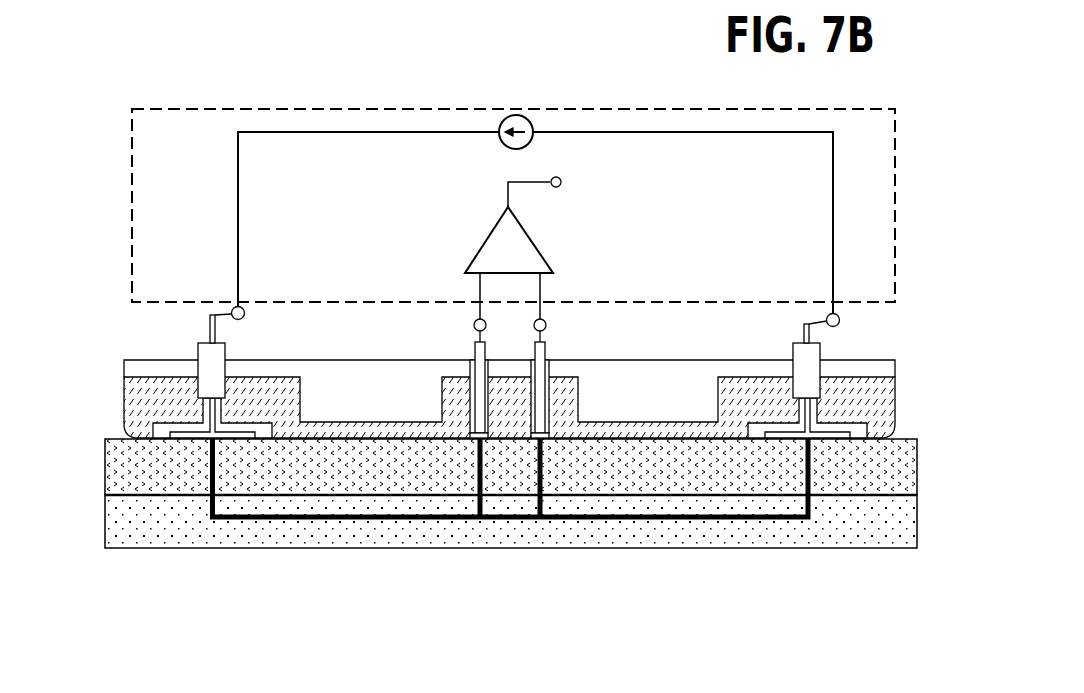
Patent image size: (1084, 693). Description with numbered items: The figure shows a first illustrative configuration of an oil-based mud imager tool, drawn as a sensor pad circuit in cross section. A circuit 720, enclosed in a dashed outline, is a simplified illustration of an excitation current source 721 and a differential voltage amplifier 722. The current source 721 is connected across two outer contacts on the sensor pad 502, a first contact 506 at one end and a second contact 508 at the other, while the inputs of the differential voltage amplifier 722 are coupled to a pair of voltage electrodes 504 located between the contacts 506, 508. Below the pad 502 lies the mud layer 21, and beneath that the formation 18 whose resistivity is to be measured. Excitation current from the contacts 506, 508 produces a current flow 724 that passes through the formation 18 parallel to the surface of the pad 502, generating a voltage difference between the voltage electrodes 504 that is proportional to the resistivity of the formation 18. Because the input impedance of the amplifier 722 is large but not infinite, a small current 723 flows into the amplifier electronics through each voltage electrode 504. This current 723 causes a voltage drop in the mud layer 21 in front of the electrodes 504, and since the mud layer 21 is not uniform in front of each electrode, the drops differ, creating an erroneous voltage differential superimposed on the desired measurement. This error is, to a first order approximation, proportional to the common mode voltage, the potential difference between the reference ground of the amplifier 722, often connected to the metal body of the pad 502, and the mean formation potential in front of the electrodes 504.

The formation 18 is at (105, 513).
The mud layer 21 is at (105, 465).
The sensor pad 502 is at (125, 387).
The voltage electrodes 504 is at (487, 438).
The first contact pad 506 is at (190, 440).
The second contact pad 508 is at (828, 435).
The circuit 720 is at (895, 302).
The excitation current source 721 is at (537, 113).
The differential voltage amplifier 722 is at (488, 242).
The current 723 is at (477, 462).
The current flow 724 is at (387, 517).